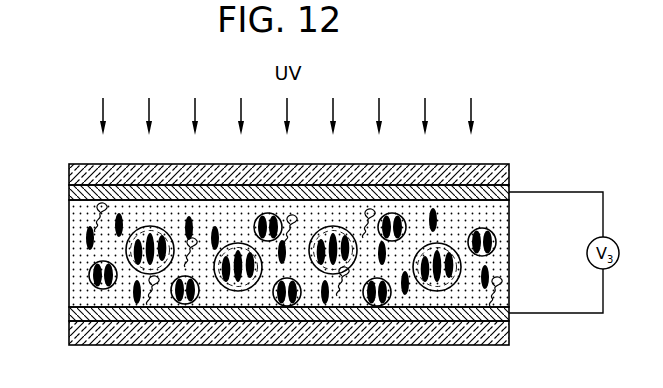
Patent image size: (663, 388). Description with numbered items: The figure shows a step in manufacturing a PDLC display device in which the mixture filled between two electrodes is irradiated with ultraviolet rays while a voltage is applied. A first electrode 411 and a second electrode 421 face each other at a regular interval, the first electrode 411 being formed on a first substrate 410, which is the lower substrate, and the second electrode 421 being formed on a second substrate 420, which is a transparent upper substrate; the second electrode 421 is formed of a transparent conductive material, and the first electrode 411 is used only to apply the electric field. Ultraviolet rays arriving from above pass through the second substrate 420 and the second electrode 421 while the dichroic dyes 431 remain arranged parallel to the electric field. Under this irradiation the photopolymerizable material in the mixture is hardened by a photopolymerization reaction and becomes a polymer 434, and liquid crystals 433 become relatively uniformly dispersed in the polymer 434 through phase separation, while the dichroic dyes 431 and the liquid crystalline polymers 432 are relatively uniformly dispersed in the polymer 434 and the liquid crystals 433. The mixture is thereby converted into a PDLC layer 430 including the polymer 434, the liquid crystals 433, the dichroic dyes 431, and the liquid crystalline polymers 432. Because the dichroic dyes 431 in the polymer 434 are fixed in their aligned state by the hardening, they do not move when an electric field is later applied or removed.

The first substrate 410 is at (78, 337).
The first electrode 411 is at (72, 314).
The second substrate 420 is at (78, 173).
The second electrode 421 is at (72, 194).
The PDLC layer 430 is at (293, 253).
The dichroic dyes 431 is at (87, 240).
The liquid crystalline polymers 432 is at (97, 208).
The liquid crystals 433 is at (88, 271).
The polymer 434 is at (78, 293).